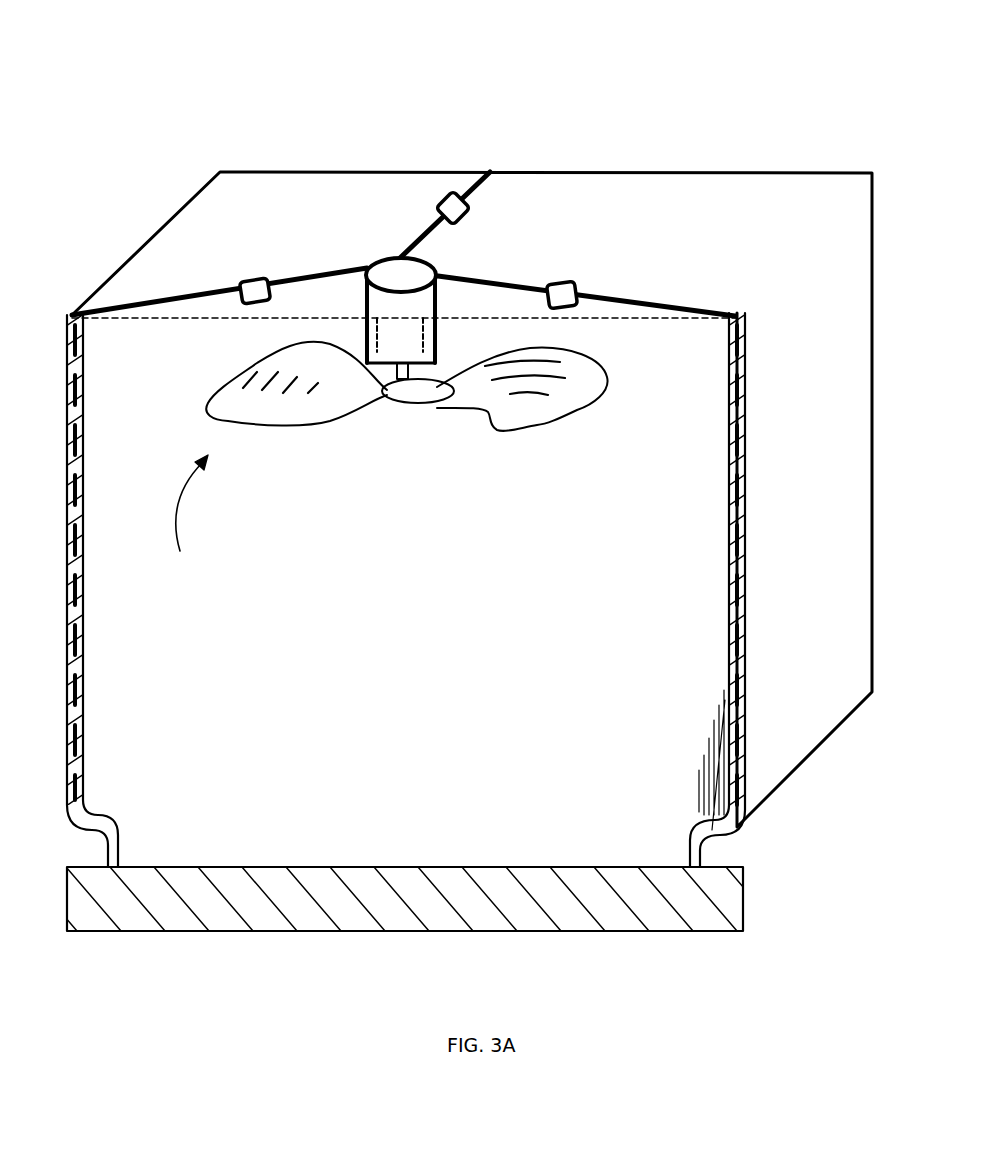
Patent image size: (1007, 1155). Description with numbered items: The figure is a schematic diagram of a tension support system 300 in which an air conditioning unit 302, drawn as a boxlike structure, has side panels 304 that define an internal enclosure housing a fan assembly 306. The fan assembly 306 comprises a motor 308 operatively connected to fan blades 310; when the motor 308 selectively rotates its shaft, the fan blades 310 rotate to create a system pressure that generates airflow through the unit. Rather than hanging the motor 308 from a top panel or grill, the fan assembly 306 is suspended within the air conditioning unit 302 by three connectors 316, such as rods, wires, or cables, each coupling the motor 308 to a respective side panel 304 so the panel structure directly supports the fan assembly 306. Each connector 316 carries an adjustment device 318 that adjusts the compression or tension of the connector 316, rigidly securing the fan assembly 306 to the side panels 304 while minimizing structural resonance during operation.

The tension support system 300 is at (471, 474).
The air conditioning unit 302 is at (402, 672).
The side panels 304 is at (68, 413).
The fan assembly 306 is at (193, 518).
The motor 308 is at (438, 347).
The fan blades 310 is at (316, 427).
The connectors 316 is at (127, 307).
The adjustment device 318 is at (260, 278).